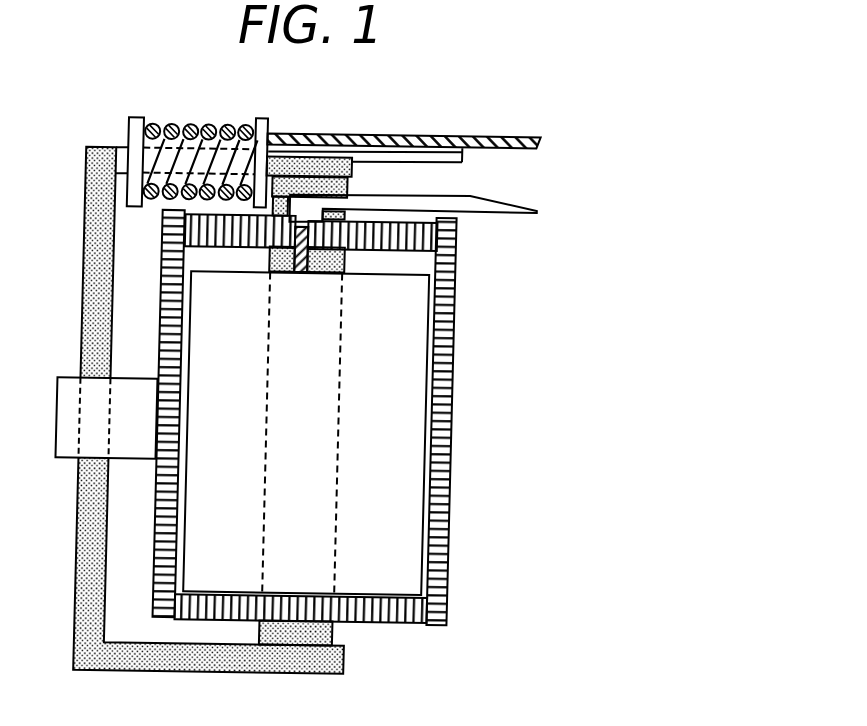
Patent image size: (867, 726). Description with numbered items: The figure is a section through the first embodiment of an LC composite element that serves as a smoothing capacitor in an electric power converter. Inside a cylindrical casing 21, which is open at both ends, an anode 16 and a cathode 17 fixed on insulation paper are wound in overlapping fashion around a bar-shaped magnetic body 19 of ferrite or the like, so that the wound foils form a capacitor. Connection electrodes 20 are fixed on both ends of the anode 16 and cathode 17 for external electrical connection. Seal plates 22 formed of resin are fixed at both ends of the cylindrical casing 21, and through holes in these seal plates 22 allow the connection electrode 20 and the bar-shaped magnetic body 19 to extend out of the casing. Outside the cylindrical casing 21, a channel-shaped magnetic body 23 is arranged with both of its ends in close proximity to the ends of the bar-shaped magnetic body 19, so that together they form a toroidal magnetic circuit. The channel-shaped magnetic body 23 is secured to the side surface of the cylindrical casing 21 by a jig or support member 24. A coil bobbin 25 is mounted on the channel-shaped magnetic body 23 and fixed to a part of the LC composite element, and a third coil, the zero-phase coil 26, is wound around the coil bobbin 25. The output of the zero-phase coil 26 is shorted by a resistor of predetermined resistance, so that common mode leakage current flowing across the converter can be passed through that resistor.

The anode 16 is at (381, 433).
The cathode 17 is at (407, 523).
The bar-shaped magnetic body 19 is at (333, 640).
The connection electrodes 20 is at (347, 262).
The cylindrical casing 21 is at (433, 473).
The seal plates 22 is at (433, 232).
The channel-shaped magnetic body 23 is at (77, 608).
The support member 24 is at (118, 432).
The coil bobbin 25 is at (130, 118).
The zero-phase coil 26 is at (193, 127).